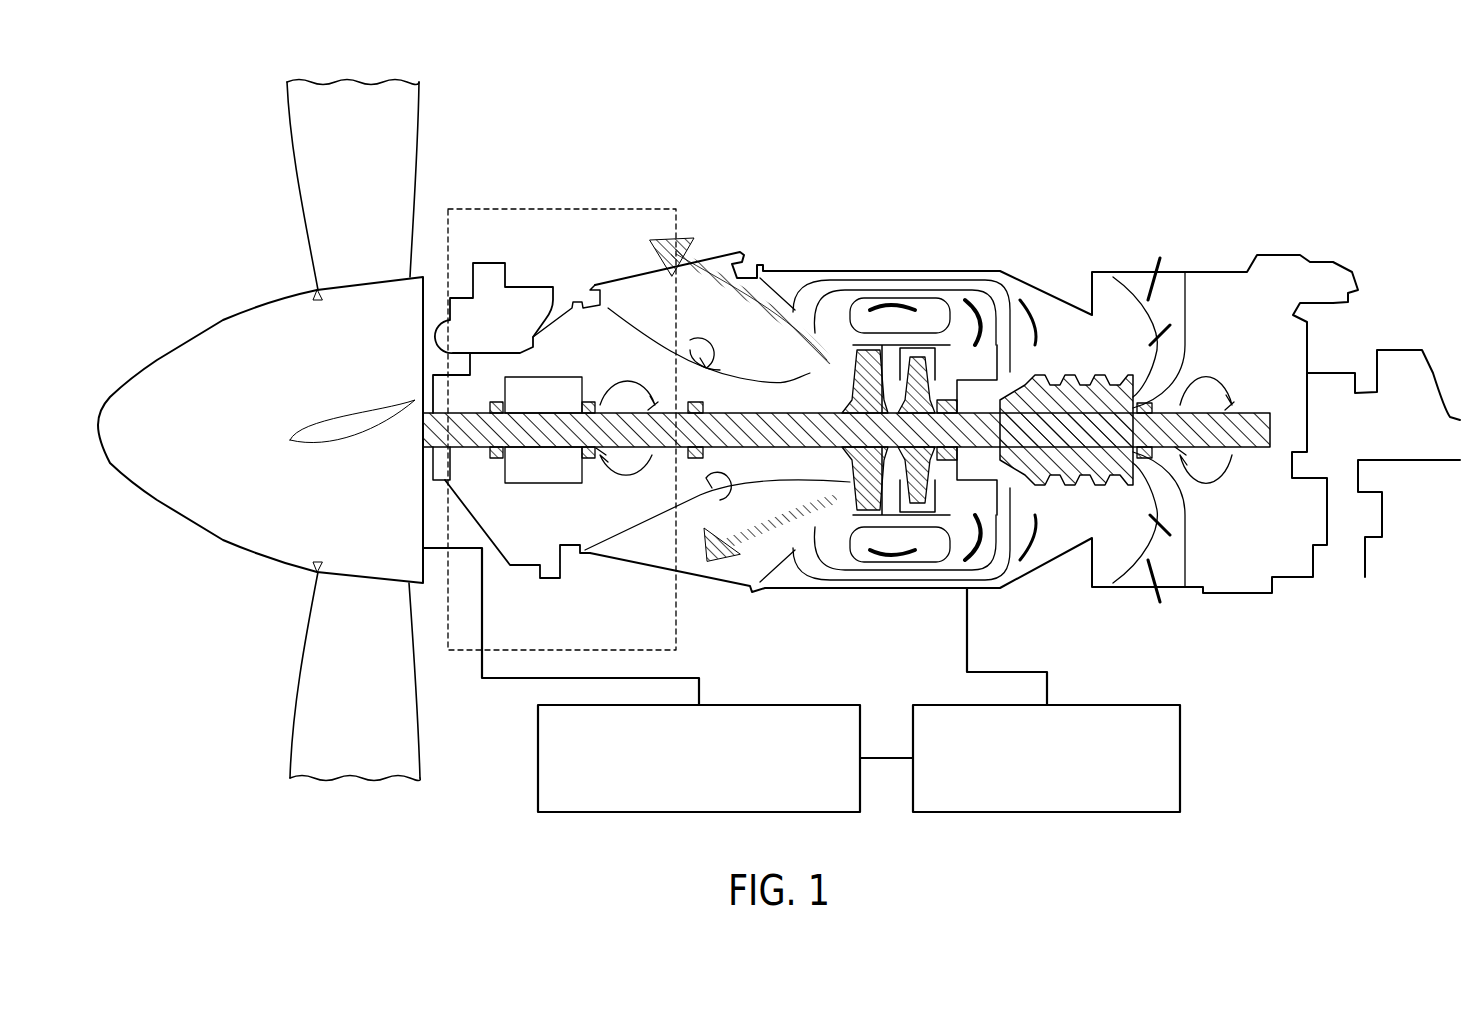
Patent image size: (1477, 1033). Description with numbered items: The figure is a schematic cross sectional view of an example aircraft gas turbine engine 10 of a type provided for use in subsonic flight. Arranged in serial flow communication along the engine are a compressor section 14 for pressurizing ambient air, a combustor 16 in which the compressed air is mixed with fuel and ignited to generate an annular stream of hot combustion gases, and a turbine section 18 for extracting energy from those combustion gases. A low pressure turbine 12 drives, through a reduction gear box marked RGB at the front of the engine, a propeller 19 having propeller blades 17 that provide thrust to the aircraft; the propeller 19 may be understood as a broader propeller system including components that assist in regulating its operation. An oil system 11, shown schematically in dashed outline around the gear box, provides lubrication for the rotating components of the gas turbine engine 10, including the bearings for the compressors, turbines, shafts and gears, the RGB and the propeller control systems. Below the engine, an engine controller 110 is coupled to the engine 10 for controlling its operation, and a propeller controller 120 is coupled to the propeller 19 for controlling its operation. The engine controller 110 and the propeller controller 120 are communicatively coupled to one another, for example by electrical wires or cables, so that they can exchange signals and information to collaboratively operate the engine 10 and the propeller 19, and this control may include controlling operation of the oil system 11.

The gas turbine engine 10 is at (1172, 142).
The oil system 11 is at (586, 200).
The low pressure turbine 12 is at (862, 345).
The compressor section 14 is at (1066, 348).
The combustor 16 is at (903, 282).
The propeller blades 17 is at (387, 117).
The turbine section 18 is at (890, 515).
The propeller 19 is at (215, 480).
The engine controller 110 is at (1072, 796).
The propeller controller 120 is at (724, 796).